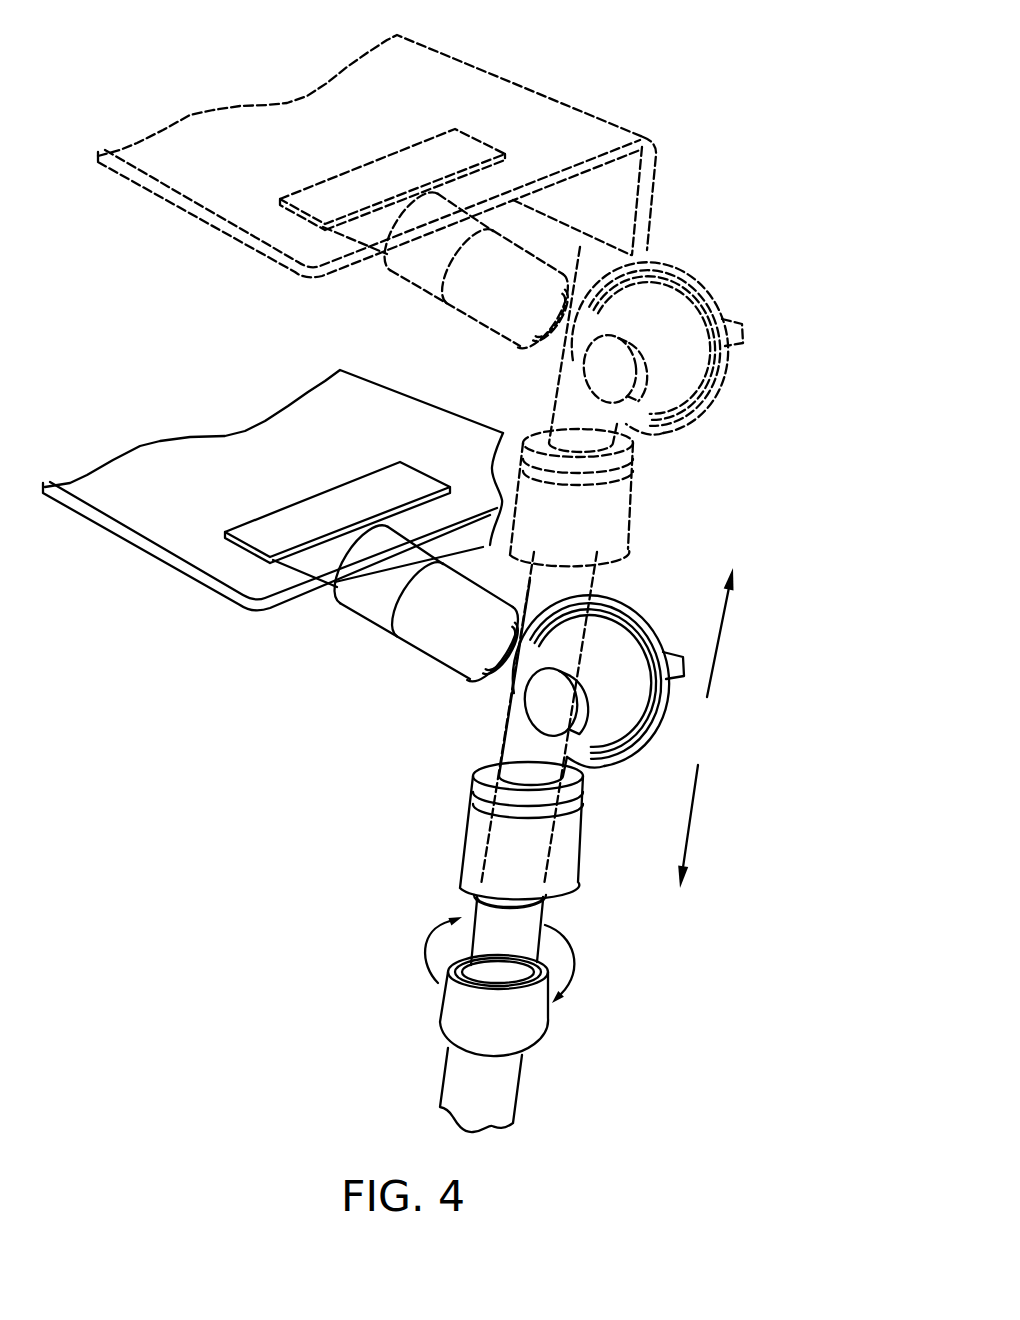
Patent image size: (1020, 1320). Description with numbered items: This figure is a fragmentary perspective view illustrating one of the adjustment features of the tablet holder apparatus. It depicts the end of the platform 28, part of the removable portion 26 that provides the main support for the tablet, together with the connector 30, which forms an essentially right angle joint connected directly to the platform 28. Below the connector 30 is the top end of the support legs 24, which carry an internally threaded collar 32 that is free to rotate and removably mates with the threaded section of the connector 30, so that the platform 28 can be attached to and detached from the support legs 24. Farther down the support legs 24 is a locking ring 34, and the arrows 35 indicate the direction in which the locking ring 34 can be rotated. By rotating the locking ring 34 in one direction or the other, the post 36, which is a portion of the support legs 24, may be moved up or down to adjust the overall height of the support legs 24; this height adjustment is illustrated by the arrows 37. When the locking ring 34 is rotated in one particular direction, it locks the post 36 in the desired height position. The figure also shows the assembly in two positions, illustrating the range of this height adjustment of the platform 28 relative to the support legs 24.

The support legs 24 is at (405, 1026).
The removable portion 26 is at (178, 598).
The platform 28 is at (207, 457).
The connector 30 is at (688, 278).
The internally threaded collar 32 is at (472, 826).
The locking ring 34 is at (527, 1030).
The arrow (direction of rotation) 35 is at (577, 967).
The post 36 is at (487, 913).
The arrows (height adjustment) 37 is at (718, 637).